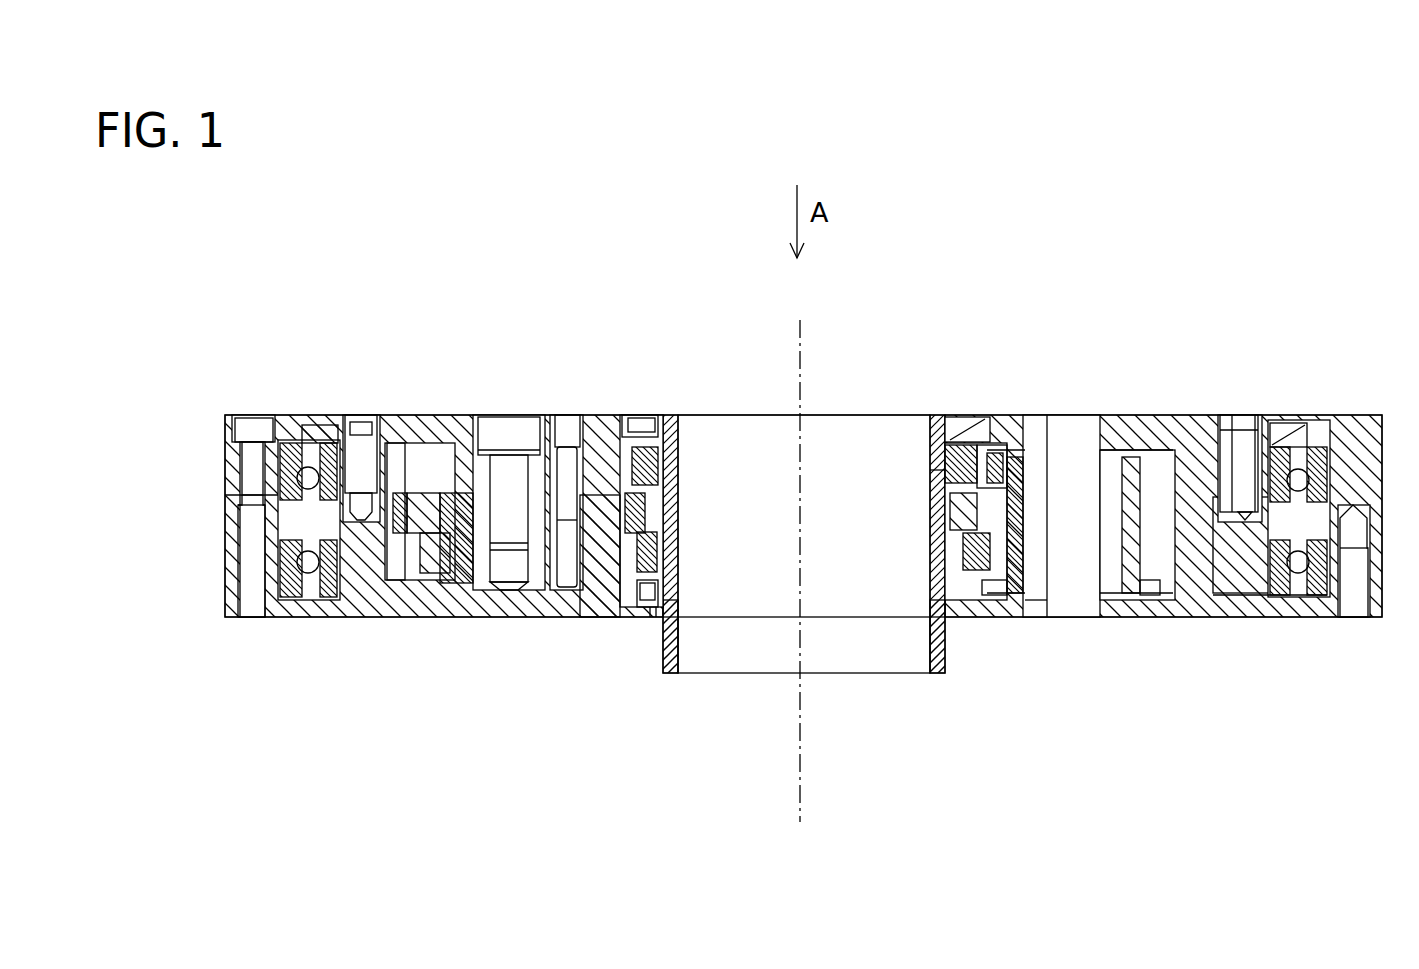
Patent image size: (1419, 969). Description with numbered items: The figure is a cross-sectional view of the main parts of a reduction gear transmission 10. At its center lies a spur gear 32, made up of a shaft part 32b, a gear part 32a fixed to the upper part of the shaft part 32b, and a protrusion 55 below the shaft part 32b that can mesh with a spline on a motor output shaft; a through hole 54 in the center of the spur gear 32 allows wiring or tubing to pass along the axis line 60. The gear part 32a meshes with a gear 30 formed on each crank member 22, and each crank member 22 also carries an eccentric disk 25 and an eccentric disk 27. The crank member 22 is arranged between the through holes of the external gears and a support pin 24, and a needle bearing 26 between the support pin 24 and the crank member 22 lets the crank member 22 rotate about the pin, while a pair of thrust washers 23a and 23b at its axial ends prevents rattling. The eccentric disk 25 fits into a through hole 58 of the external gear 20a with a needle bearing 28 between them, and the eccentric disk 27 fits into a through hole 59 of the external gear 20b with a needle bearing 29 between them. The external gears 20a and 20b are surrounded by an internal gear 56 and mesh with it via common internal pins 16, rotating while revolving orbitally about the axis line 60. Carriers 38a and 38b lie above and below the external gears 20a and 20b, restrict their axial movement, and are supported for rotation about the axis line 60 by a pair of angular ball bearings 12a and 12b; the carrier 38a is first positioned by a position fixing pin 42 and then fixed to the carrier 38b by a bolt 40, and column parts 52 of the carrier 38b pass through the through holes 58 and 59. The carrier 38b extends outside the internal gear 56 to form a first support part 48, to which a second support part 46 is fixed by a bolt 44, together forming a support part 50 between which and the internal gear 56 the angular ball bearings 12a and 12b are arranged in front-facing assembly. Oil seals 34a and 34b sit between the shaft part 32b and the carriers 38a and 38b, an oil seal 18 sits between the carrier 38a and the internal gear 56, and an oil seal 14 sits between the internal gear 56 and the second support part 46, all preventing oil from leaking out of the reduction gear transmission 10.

The reduction gear transmission 10 is at (1335, 295).
The angular ball bearing 12a is at (1310, 440).
The angular ball bearing 12b is at (1300, 565).
The oil seal 14 is at (1284, 435).
The internal pin 16 is at (1230, 432).
The oil seal 18 is at (1197, 432).
The external gear 20a is at (398, 465).
The external gear 20b is at (432, 565).
The crank member 22 is at (1135, 455).
The thrust washer 23a is at (1045, 440).
The thrust washer 23b is at (1025, 600).
The support pin 24 is at (1093, 430).
The eccentric disk 25 is at (1015, 455).
The needle bearing 26 is at (1030, 440).
The eccentric disk 27 is at (1115, 560).
The needle bearing 28 is at (983, 445).
The needle bearing 29 is at (985, 580).
The gear 30 is at (1000, 445).
The spur gear 32 is at (930, 537).
The gear part 32a is at (955, 425).
The shaft part 32b is at (930, 480).
The oil seal 34a is at (640, 430).
The oil seal 34b is at (645, 607).
The carrier 38a is at (600, 445).
The carrier 38b is at (465, 585).
The bolt 40 is at (497, 430).
The position fixing pin 42 is at (567, 470).
The bolt 44 is at (252, 428).
The second support part 46 is at (225, 455).
The first support part 48 is at (203, 556).
The support part 50 is at (194, 516).
The column part 52 is at (540, 565).
The through hole 54 is at (678, 588).
The protrusion 55 is at (942, 650).
The internal gear 56 is at (1245, 560).
The through hole 58 is at (600, 565).
The through hole 59 is at (630, 555).
The axis line 60 is at (800, 589).